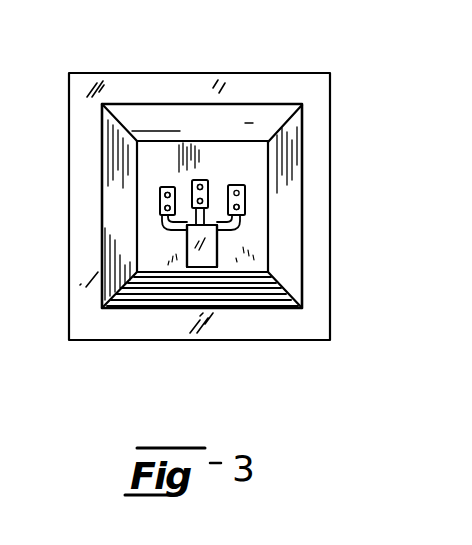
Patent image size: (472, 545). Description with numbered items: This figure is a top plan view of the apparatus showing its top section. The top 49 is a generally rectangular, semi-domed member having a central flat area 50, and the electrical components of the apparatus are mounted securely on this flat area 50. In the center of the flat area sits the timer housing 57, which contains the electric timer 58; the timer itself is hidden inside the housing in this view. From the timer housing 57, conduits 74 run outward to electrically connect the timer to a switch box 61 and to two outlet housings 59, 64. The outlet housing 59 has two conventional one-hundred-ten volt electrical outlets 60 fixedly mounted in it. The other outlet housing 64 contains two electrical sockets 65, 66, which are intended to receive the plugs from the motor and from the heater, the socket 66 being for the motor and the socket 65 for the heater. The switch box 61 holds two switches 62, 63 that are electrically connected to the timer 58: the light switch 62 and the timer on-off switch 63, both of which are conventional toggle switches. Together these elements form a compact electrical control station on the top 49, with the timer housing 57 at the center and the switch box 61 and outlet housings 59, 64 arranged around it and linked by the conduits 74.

The top 49 is at (292, 281).
The central flat area 50 is at (291, 141).
The timer housing 57 is at (205, 258).
The electric timer 58 is at (233, 306).
The outlet housing 59 is at (247, 203).
The electrical outlets 60 is at (304, 226).
The switch box 61 is at (200, 179).
The light switch 62 is at (256, 112).
The timer on-off switch 63 is at (256, 128).
The outlet housing 64 is at (160, 204).
The electrical socket 65 is at (91, 218).
The electrical socket 66 is at (91, 234).
The conduits 74 is at (165, 232).